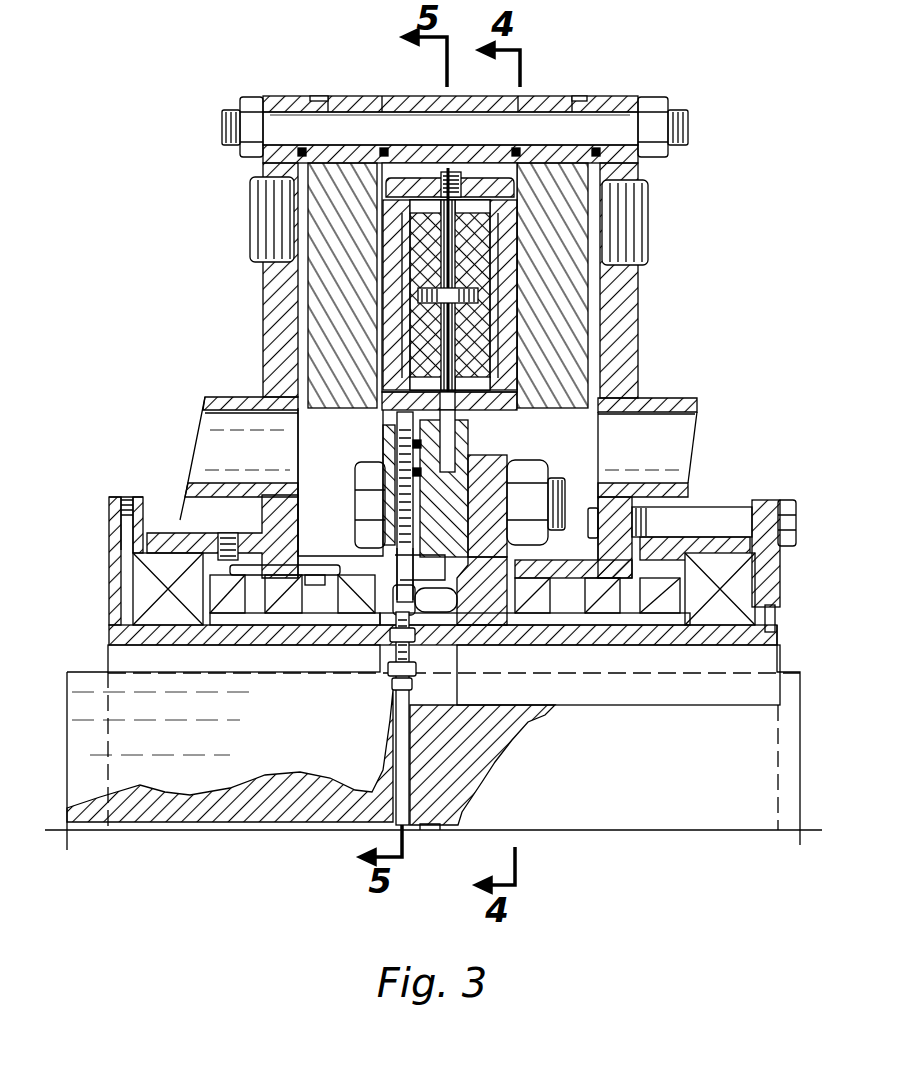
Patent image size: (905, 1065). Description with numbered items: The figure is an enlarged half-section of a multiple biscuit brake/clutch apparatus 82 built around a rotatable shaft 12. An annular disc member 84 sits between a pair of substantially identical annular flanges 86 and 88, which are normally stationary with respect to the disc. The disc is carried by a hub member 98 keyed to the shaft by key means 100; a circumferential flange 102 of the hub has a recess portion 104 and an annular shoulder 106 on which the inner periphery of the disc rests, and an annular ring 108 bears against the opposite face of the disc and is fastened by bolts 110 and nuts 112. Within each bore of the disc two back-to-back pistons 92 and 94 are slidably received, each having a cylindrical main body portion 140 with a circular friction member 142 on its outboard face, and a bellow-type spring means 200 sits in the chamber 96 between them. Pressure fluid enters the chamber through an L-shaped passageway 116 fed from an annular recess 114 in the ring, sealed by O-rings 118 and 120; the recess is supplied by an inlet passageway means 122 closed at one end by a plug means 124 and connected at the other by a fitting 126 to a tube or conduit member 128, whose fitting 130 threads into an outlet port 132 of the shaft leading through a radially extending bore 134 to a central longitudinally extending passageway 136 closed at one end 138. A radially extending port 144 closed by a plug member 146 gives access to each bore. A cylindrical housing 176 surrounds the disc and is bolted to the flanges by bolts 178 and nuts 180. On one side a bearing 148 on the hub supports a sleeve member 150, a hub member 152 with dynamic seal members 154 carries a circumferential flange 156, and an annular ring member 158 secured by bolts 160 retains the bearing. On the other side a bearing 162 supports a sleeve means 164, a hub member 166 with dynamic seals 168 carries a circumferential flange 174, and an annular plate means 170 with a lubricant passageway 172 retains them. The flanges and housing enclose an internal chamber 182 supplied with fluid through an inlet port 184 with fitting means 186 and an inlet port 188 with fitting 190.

The shaft 12 is at (106, 672).
The brake/clutch apparatus 82 is at (212, 309).
The annular disc member 84 is at (486, 185).
The annular flange 86 is at (552, 96).
The annular flange 88 is at (362, 96).
The piston 92 is at (540, 380).
The piston 94 is at (408, 362).
The chamber 96 is at (438, 185).
The hub member 98 is at (722, 627).
The key means 100 is at (655, 705).
The circumferential flange 102 is at (490, 627).
The recess portion 104 is at (470, 458).
The annular shoulder 106 is at (470, 547).
The annular ring 108 is at (400, 510).
The bolt 110 is at (570, 486).
The nut 112 is at (520, 470).
The annular recess 114 is at (440, 442).
The L-shaped passageway 116 is at (400, 452).
The O-ring 118 is at (360, 466).
The O-ring 120 is at (410, 485).
The inlet passageway means 122 is at (400, 540).
The plug means 124 is at (376, 415).
The fitting 126 is at (452, 568).
The tube or conduit member 128 is at (457, 600).
The fitting 130 is at (402, 670).
The outlet port 132 is at (405, 697).
The radially extending bore 134 is at (396, 737).
The longitudinally extending passageway 136 is at (276, 822).
The closed end 138 is at (432, 829).
The main body portion 140 is at (415, 262).
The friction member 142 is at (470, 348).
The radially extending port 144 is at (452, 172).
The plug member 146 is at (468, 190).
The bearing 148 is at (715, 570).
The sleeve member 150 is at (683, 512).
The hub member 152 is at (648, 522).
The dynamic seal members 154 is at (640, 626).
The circumferential flange 156 is at (620, 350).
The annular ring member 158 is at (770, 562).
The bolt 160 is at (790, 505).
The bearing 162 is at (160, 612).
The sleeve means 164 is at (172, 545).
The hub member 166 is at (330, 587).
The dynamic seals 168 is at (290, 600).
The annular plate means 170 is at (120, 510).
The passageway 172 is at (125, 552).
The circumferential flange 174 is at (272, 376).
The cylindrical housing 176 is at (428, 96).
The bolt 178 is at (603, 122).
The nut 180 is at (258, 108).
The internal chamber 182 is at (262, 186).
The inlet port 184 is at (642, 402).
The fitting means 186 is at (686, 408).
The inlet port 188 is at (268, 410).
The fitting 190 is at (232, 404).
The bellow-type spring means 200 is at (456, 238).